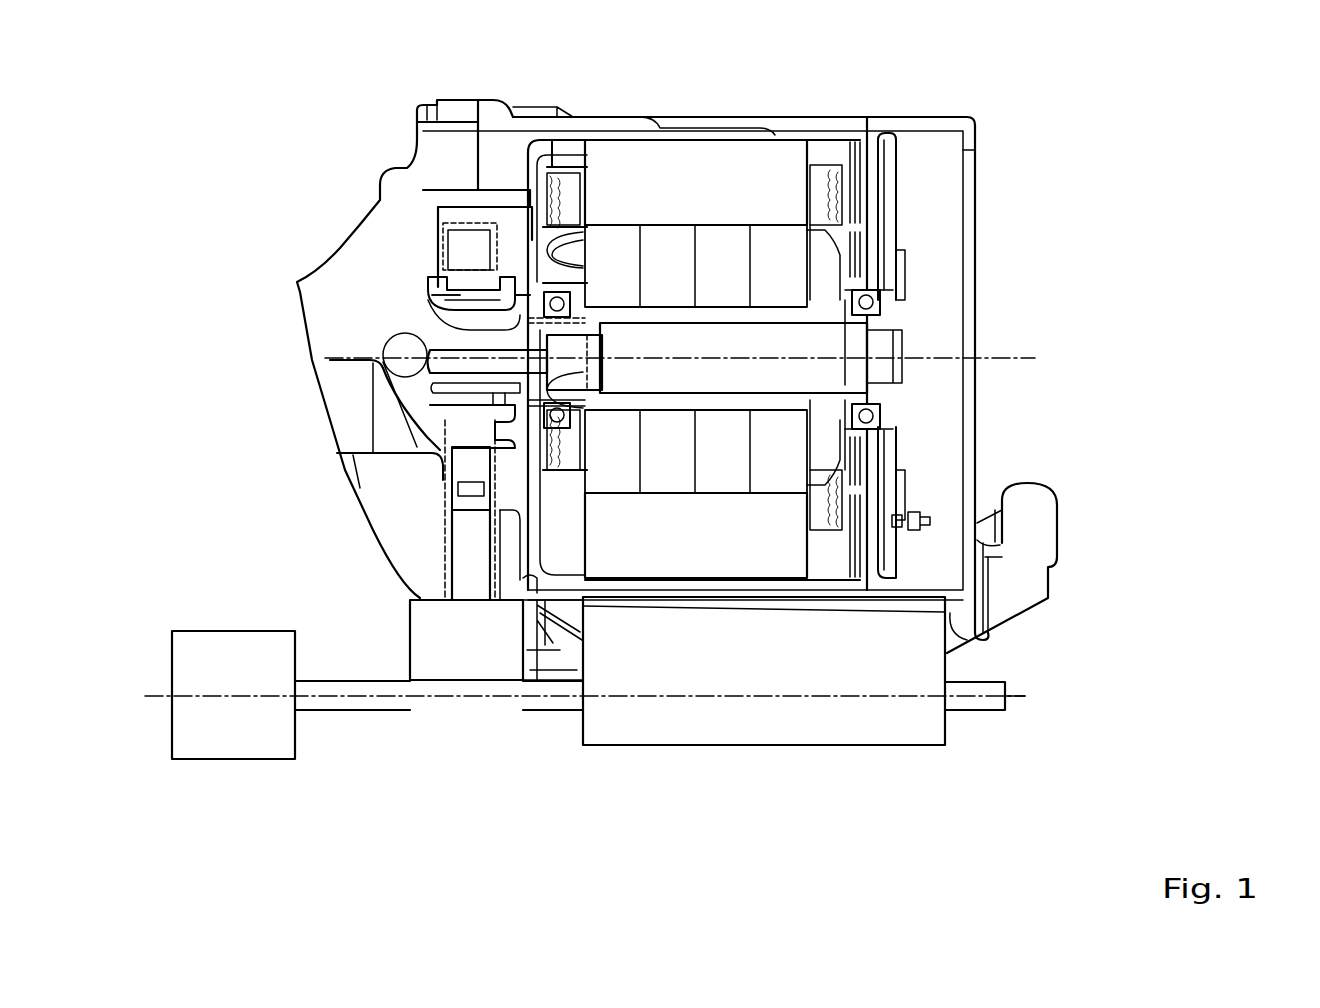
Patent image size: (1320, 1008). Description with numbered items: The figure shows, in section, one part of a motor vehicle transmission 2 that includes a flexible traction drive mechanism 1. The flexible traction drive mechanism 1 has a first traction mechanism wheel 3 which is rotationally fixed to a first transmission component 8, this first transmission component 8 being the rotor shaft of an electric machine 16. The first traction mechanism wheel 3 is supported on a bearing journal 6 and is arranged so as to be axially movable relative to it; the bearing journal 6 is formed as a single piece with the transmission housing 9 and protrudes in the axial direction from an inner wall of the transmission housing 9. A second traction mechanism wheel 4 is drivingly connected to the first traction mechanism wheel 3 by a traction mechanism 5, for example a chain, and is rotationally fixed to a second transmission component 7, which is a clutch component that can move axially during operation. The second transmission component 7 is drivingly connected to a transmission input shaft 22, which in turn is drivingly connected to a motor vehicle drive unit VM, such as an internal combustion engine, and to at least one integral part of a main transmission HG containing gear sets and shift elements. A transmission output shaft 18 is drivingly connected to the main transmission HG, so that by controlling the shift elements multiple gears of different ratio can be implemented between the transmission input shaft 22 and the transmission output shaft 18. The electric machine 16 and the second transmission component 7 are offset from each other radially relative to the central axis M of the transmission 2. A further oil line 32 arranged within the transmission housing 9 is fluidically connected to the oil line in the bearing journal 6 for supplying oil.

The flexible traction drive mechanism 1 is at (463, 222).
The motor vehicle transmission 2 is at (1076, 133).
The first traction mechanism wheel 3 is at (460, 295).
The second traction mechanism wheel 4 is at (462, 545).
The traction mechanism 5 is at (467, 467).
The bearing journal 6 is at (436, 372).
The second transmission component 7 is at (490, 658).
The first transmission component 8 is at (657, 320).
The transmission housing 9 is at (378, 230).
The electric machine 16 is at (937, 290).
The transmission output shaft 18 is at (985, 704).
The transmission input shaft 22 is at (408, 705).
The further oil line 32 is at (390, 340).
The motor vehicle drive unit VM is at (234, 762).
The main transmission HG is at (742, 752).
The central axis M is at (1015, 694).